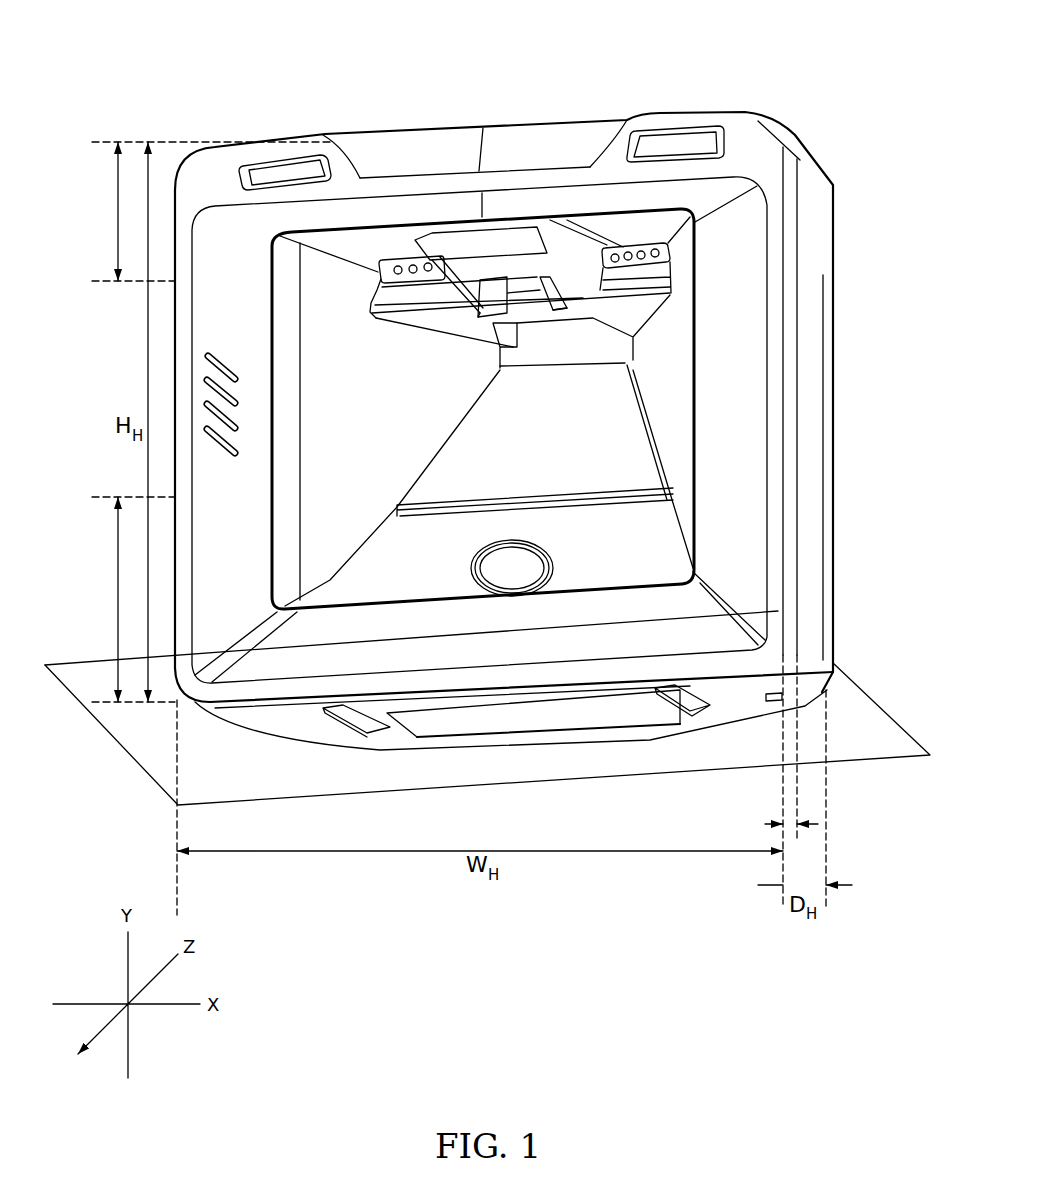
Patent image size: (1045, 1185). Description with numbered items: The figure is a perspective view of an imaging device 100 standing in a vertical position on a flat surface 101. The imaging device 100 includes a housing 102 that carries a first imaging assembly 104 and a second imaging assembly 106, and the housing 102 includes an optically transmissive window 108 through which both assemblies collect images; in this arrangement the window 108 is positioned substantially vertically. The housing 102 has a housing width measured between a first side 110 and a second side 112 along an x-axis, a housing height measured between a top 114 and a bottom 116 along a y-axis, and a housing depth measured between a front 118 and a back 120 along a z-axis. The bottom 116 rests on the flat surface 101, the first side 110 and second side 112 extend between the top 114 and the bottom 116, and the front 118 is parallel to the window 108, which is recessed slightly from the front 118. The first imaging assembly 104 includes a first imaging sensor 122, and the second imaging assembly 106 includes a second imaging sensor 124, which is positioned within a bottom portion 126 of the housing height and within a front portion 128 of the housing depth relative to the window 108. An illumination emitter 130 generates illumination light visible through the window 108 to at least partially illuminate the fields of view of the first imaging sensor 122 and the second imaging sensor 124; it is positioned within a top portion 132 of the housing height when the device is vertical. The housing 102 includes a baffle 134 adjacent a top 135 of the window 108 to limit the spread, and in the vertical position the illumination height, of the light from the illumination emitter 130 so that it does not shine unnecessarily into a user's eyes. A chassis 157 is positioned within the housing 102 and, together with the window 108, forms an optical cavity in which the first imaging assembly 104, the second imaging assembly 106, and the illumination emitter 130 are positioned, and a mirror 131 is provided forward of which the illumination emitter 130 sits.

The imaging device 100 is at (140, 40).
The flat surface 101 is at (128, 727).
The housing 102 is at (308, 136).
The first imaging assembly 104 is at (530, 332).
The second imaging assembly 106 is at (501, 576).
The window 108 is at (677, 447).
The first side 110 is at (173, 202).
The second side 112 is at (787, 215).
The top 114 is at (265, 142).
The bottom 116 is at (217, 708).
The front 118 is at (753, 135).
The back 120 is at (833, 200).
The first imaging sensor 122 is at (588, 332).
The second imaging sensor 124 is at (518, 560).
The bottom portion 126 is at (117, 601).
The front portion 128 is at (787, 818).
The illumination emitter 130 is at (460, 232).
The mirror 131 is at (597, 442).
The top portion 132 is at (117, 211).
The baffle 134 is at (530, 192).
The top of the window 135 is at (595, 212).
The chassis 157 is at (637, 530).